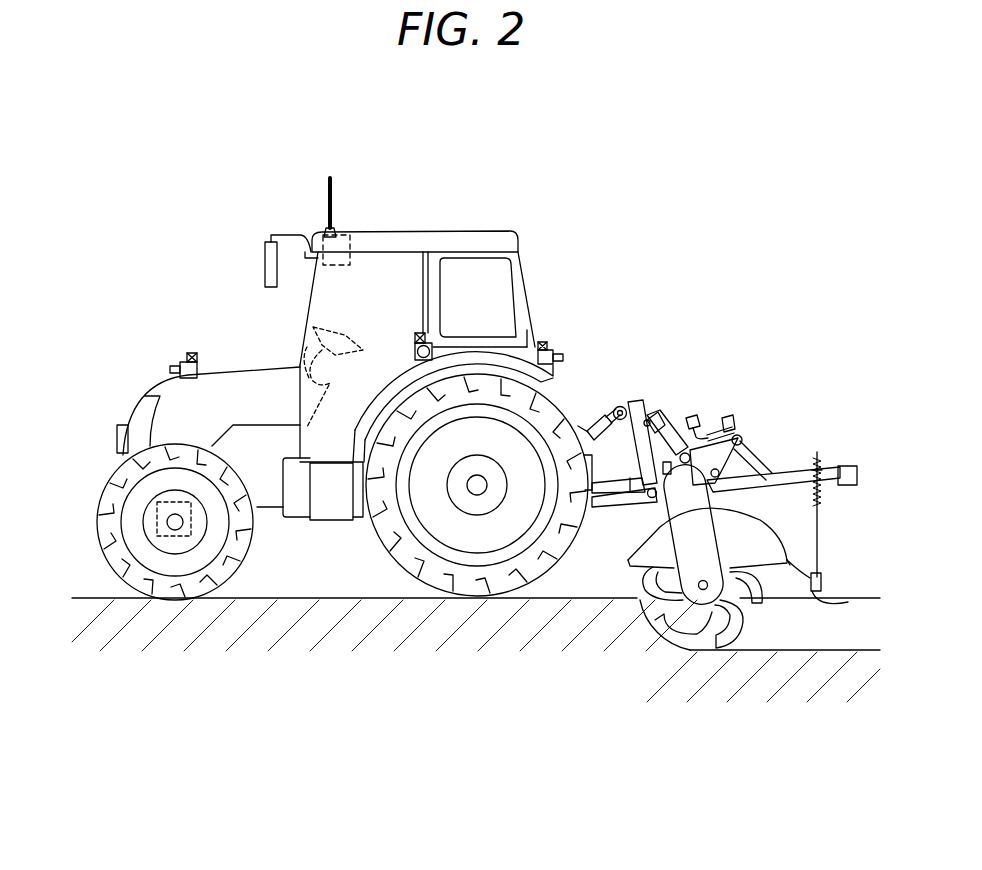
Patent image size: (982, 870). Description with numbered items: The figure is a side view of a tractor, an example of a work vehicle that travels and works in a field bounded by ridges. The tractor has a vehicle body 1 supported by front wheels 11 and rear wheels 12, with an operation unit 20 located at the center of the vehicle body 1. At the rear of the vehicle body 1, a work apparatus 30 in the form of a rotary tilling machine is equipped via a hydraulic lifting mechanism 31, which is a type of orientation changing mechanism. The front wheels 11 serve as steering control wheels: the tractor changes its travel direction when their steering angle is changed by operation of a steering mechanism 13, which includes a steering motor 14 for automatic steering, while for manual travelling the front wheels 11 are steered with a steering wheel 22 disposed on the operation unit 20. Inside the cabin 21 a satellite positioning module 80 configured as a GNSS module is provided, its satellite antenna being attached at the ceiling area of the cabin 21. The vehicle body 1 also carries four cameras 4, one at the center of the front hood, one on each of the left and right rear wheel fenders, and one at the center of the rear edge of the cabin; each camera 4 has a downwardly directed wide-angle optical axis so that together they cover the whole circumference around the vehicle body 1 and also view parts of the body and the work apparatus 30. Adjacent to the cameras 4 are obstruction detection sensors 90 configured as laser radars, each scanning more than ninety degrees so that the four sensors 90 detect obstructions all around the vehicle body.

The vehicle body 1 is at (300, 530).
The camera 4 is at (172, 366).
The front wheels 11 is at (172, 600).
The rear wheels 12 is at (488, 598).
The steering mechanism 13 is at (152, 523).
The steering motor 14 is at (113, 478).
The operation unit 20 is at (367, 330).
The cabin 21 is at (518, 238).
The steering wheel 22 is at (333, 330).
The work apparatus 30 is at (705, 637).
The hydraulic lifting mechanism 31 is at (650, 398).
The satellite positioning module 80 is at (340, 225).
The obstruction detection sensor 90 is at (195, 360).